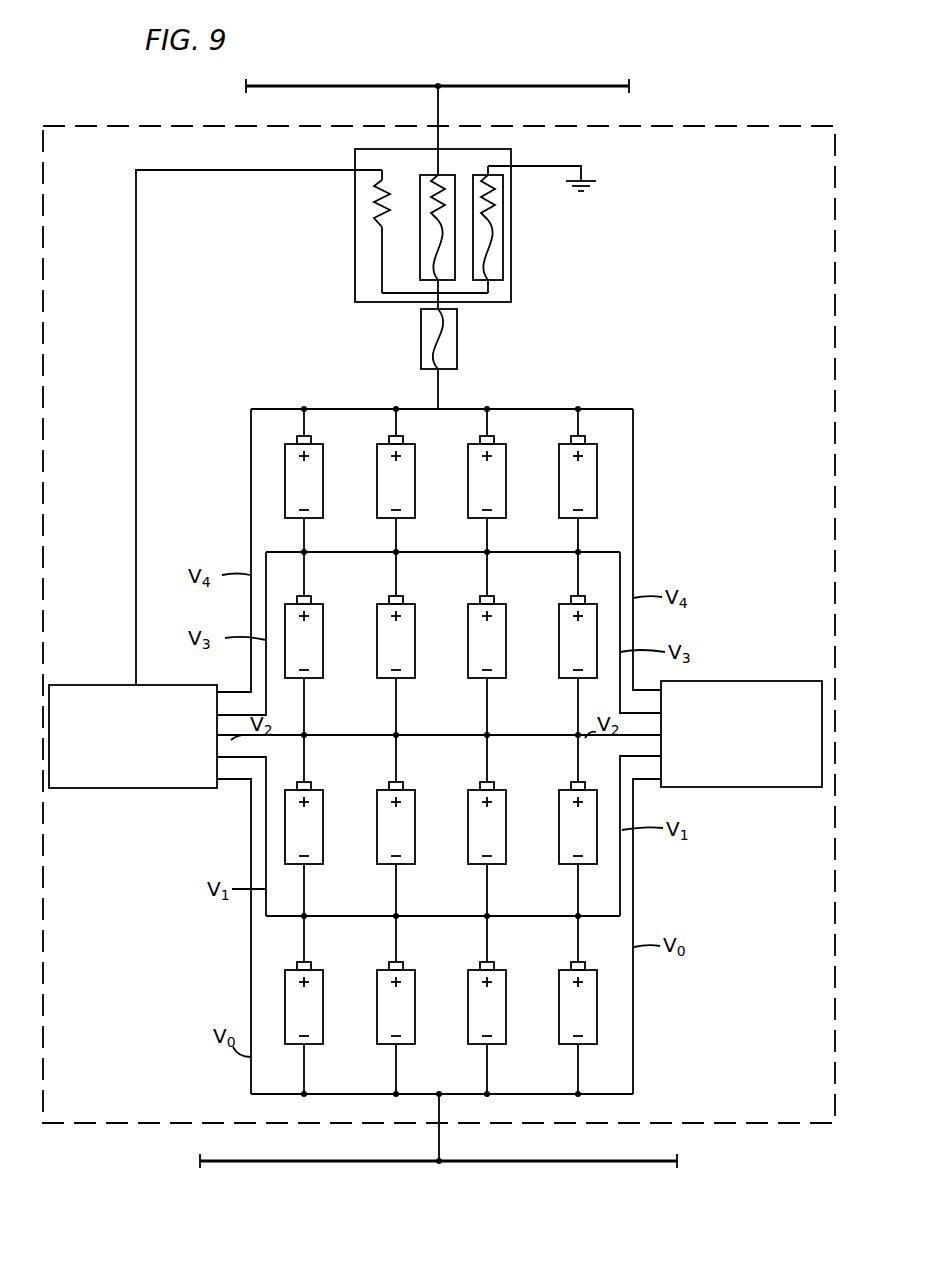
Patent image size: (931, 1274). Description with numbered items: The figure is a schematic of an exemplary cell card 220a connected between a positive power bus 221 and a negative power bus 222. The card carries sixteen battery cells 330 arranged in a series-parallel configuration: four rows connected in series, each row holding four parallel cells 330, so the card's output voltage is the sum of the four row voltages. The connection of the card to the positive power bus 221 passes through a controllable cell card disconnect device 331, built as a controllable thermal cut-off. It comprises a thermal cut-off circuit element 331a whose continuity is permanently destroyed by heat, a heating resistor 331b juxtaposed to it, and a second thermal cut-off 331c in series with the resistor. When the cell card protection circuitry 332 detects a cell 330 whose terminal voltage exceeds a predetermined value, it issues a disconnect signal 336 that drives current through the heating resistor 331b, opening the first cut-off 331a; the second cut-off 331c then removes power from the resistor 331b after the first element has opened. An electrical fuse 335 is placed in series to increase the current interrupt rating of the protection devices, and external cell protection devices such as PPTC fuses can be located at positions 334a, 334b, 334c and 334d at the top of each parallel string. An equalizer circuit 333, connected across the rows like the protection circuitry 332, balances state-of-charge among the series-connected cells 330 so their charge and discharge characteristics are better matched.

The cell card 220a is at (724, 145).
The positive power bus 221 is at (344, 89).
The negative power bus 222 is at (368, 1166).
The battery cell 330 is at (559, 637).
The cell card disconnect device 331 is at (461, 225).
The thermal cut-off circuit element 331a is at (420, 252).
The heating resistor 331b is at (376, 212).
The second thermal cut-off 331c is at (511, 265).
The cell card protection circuitry 332 is at (116, 782).
The equalizer circuit 333 is at (724, 782).
The external cell protection device location 334a is at (305, 412).
The external cell protection device location 334b is at (397, 412).
The external cell protection device location 334c is at (488, 412).
The external cell protection device location 334d is at (580, 409).
The electrical fuse 335 is at (458, 356).
The disconnect signal 336 is at (137, 347).